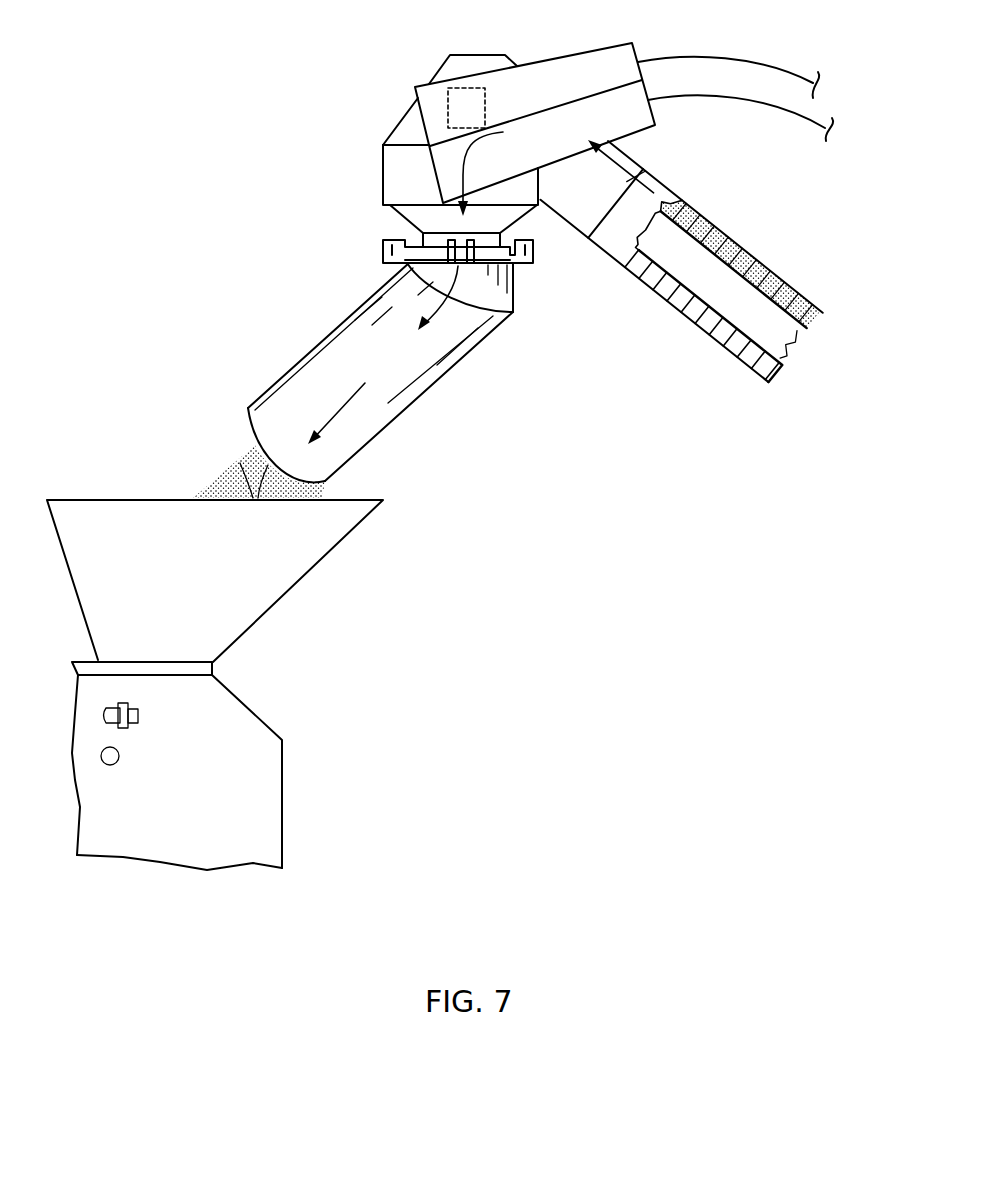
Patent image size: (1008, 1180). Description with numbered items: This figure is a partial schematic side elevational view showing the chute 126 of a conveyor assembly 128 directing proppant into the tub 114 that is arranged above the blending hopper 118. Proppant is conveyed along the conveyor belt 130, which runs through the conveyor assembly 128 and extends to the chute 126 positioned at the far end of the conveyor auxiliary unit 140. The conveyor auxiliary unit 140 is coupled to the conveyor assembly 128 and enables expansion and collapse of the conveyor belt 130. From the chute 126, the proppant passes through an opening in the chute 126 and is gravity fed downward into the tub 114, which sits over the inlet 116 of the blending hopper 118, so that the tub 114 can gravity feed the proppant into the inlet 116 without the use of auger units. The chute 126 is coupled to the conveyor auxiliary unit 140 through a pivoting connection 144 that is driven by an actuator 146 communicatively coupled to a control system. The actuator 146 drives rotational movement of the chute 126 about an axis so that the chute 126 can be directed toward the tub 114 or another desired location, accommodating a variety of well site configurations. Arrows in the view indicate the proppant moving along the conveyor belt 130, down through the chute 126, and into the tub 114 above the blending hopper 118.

The tub 114 is at (267, 587).
The inlet 116 is at (143, 659).
The blending hopper 118 is at (224, 825).
The chute 126 is at (350, 360).
The conveyor assembly 128 is at (748, 228).
The conveyor belt 130 is at (772, 280).
The conveyor auxiliary unit 140 is at (675, 351).
The pivoting connection 144 is at (420, 245).
The actuator 146 is at (447, 114).